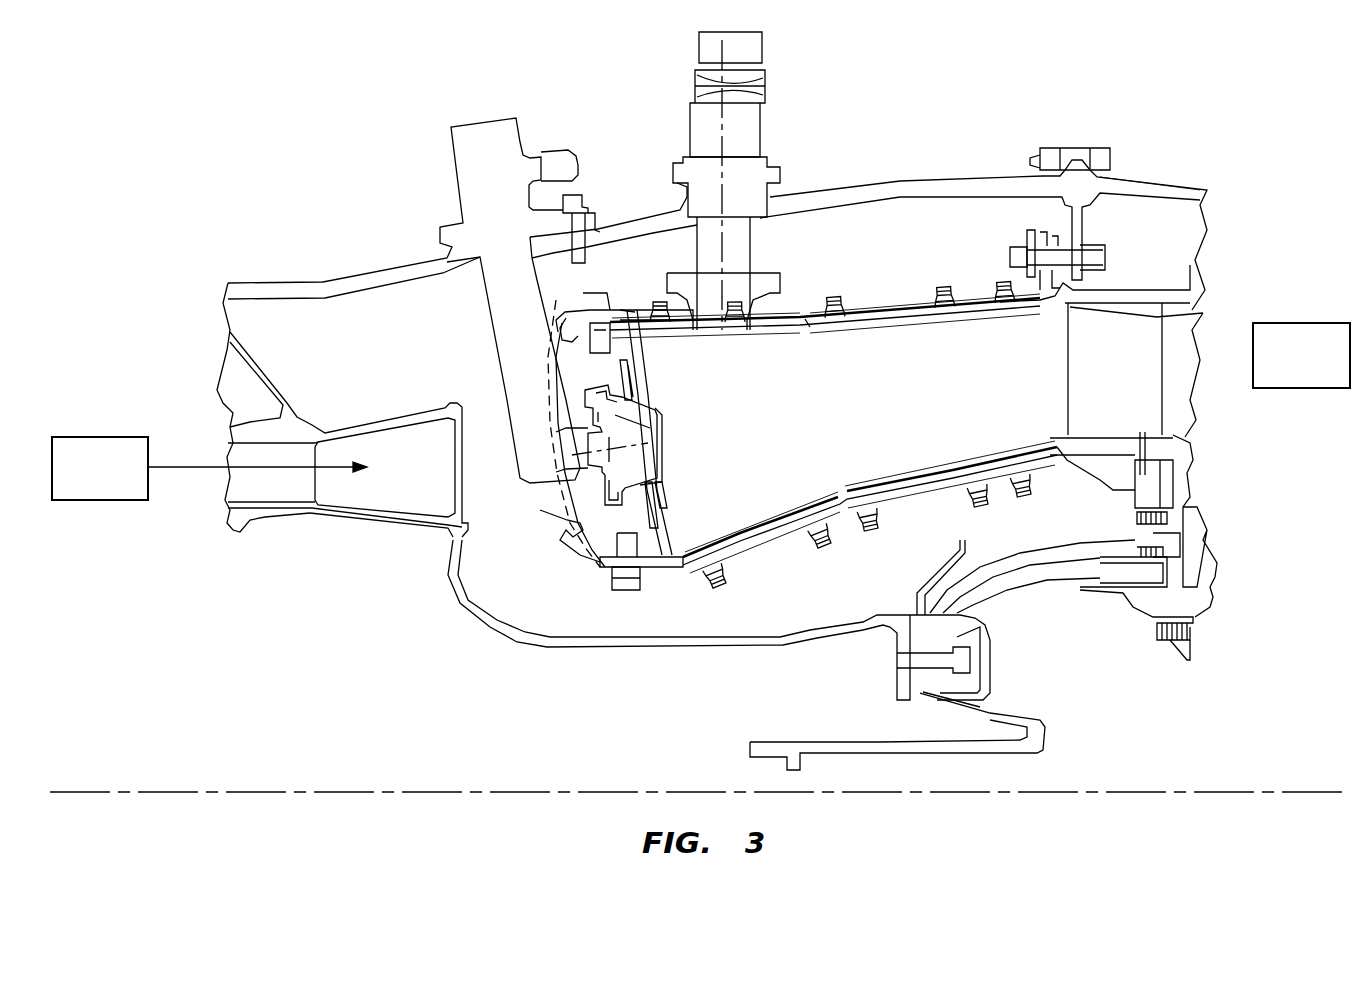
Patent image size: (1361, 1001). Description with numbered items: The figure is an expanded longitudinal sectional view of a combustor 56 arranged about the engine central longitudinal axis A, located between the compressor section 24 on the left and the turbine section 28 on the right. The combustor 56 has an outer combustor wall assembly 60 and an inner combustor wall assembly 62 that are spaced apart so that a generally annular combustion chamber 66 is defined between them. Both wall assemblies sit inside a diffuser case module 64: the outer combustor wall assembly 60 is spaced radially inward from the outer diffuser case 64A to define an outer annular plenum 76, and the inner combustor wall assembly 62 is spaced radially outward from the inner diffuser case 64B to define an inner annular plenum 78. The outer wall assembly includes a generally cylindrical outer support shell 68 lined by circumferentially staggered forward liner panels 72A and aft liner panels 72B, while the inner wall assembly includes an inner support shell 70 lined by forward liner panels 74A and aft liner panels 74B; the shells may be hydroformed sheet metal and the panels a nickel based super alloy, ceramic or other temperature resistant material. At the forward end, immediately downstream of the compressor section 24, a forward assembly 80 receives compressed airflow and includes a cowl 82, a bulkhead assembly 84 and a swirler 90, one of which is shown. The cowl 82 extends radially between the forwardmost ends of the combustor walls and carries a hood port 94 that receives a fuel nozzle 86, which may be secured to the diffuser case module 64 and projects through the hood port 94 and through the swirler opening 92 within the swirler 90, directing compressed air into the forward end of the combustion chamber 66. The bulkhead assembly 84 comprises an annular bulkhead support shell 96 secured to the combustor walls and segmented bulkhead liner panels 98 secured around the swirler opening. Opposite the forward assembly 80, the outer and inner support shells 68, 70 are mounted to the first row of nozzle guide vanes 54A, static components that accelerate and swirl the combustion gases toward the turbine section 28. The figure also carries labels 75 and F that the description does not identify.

The compressor section 24 is at (112, 483).
The turbine section 28 is at (1313, 371).
The nozzle guide vanes 54A is at (1135, 385).
The combustor 56 is at (1045, 100).
The outer combustor wall assembly 60 is at (897, 297).
The inner combustor wall assembly 62 is at (842, 525).
The diffuser case module 64 is at (889, 175).
The outer diffuser case 64A is at (975, 183).
The inner diffuser case 64B is at (742, 650).
The combustion chamber 66 is at (871, 431).
The outer support shell 68 is at (863, 305).
The inner support shell 70 is at (937, 483).
The forward liner panels 72A is at (760, 330).
The aft liner panels 72B is at (940, 320).
The forward liner panels 74A is at (765, 520).
The aft liner panels 74B is at (915, 470).
The fastener 75 is at (1025, 470).
The outer annular plenum 76 is at (829, 248).
The inner annular plenum 78 is at (805, 618).
The forward assembly 80 is at (558, 580).
The cowl 82 is at (575, 537).
The bulkhead assembly 84 is at (655, 372).
The fuel nozzle 86 is at (514, 253).
The swirler 90 is at (665, 470).
The swirler opening 92 is at (665, 398).
The hood port 94 is at (562, 515).
The bulkhead support shell 96 is at (580, 567).
The bulkhead liner panels 98 is at (668, 505).
The engine central longitudinal axis A is at (568, 792).
The fuel nozzle axis F is at (680, 430).